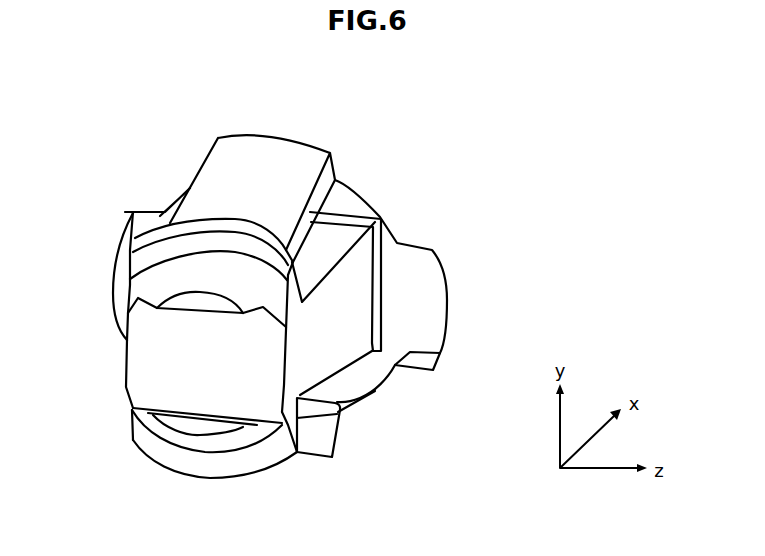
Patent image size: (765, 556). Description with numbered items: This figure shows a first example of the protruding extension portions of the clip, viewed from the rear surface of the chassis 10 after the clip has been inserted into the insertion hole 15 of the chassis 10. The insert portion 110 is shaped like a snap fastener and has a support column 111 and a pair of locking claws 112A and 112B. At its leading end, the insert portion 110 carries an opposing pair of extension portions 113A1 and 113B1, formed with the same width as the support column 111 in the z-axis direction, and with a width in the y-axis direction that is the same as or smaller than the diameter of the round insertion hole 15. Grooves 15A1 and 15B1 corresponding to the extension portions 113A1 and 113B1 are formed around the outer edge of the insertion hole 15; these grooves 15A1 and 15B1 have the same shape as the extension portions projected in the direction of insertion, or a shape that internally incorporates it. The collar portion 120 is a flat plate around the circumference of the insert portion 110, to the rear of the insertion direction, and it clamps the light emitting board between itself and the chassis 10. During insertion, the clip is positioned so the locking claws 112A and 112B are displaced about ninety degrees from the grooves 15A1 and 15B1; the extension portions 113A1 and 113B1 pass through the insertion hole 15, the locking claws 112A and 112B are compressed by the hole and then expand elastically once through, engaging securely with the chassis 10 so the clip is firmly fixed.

The chassis 10 is at (450, 137).
The insertion hole 15 is at (399, 270).
The groove 15A1 is at (421, 309).
The groove 15B1 is at (112, 273).
The insert portion 110 is at (153, 363).
The support column 111 is at (346, 276).
The locking claw 112A is at (262, 142).
The locking claw 112B is at (308, 442).
The extension portion 113A1 is at (162, 240).
The extension portion 113B1 is at (155, 447).
The collar portion 120 is at (365, 372).